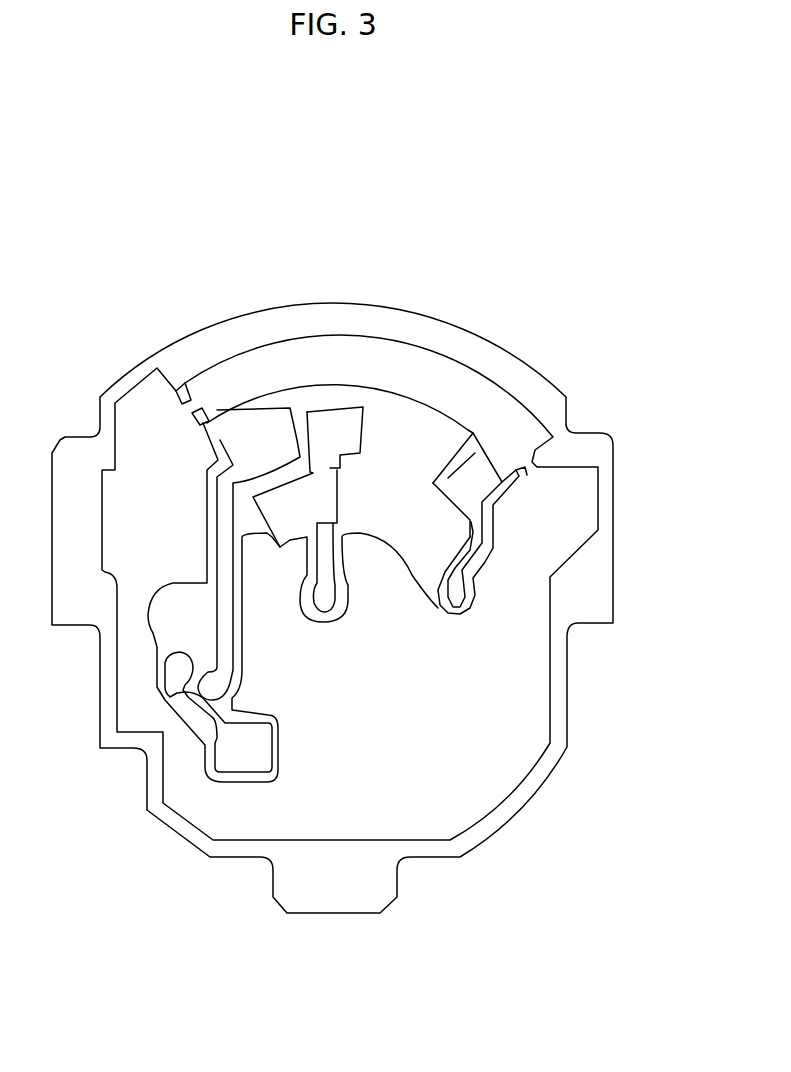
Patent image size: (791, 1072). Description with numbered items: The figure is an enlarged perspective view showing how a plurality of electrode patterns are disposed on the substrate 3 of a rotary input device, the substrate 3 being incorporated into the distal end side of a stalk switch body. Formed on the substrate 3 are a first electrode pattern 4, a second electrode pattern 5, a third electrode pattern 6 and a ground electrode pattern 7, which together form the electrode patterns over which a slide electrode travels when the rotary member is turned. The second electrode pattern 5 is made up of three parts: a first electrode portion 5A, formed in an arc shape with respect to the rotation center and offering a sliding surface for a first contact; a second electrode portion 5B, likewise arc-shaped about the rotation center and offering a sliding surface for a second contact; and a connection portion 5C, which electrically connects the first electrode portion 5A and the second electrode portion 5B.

The substrate 3 is at (558, 745).
The first electrode pattern 4 is at (245, 437).
The second electrode pattern 5 is at (279, 233).
The first electrode portion 5A is at (313, 413).
The second electrode portion 5B is at (300, 503).
The connection portion 5C is at (330, 467).
The third electrode pattern 6 is at (473, 433).
The ground electrode pattern 7 is at (497, 425).